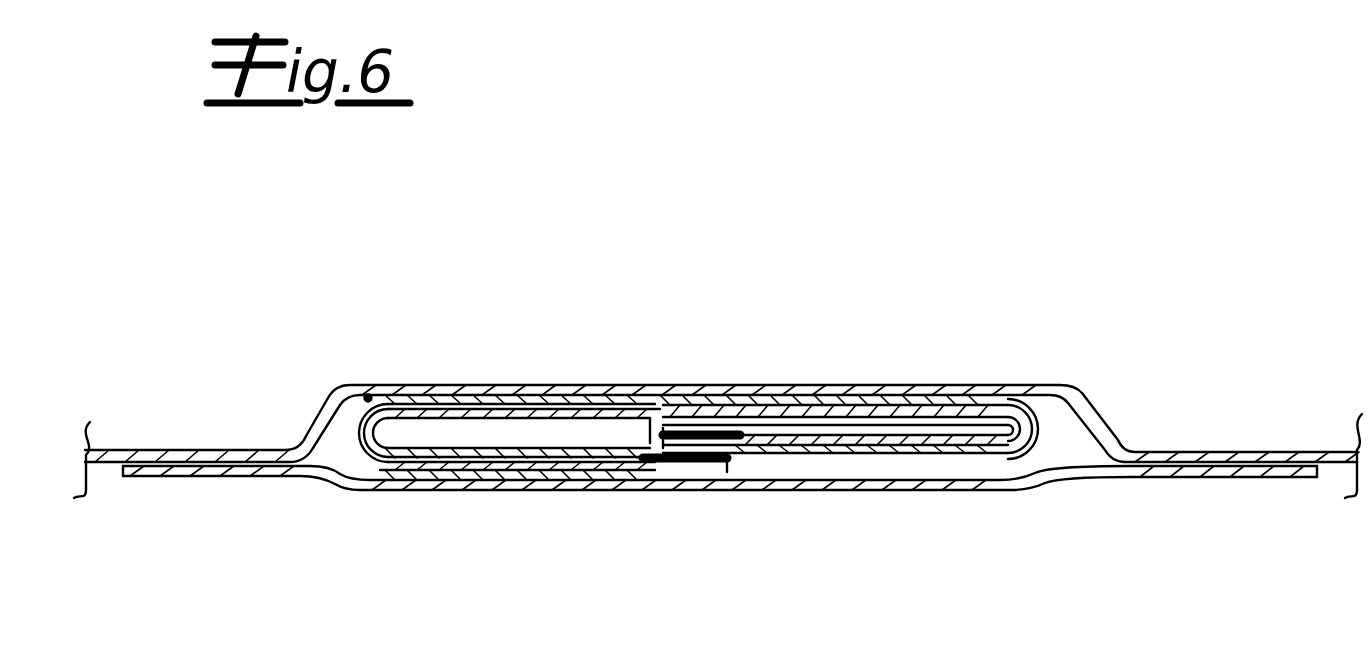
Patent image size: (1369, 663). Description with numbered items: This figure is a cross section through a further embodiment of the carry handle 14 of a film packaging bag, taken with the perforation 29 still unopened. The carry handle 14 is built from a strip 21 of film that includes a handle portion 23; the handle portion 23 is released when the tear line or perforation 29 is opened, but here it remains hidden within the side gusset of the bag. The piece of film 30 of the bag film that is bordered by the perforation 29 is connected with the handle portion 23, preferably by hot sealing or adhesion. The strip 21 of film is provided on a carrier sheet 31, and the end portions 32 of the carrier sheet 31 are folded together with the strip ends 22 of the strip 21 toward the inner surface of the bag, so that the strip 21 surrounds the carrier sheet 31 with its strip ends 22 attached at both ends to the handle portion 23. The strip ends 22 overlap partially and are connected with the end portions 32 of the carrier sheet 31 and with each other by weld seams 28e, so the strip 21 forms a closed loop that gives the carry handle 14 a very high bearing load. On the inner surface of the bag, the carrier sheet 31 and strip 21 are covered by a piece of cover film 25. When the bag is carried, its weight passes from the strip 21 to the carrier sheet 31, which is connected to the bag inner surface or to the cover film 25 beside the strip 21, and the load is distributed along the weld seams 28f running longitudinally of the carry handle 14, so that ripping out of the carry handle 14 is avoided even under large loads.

The carry handle 14 is at (778, 264).
The strip of film 21 is at (369, 395).
The strip ends 22 is at (772, 432).
The handle portion 23 is at (527, 395).
The piece of cover film 25 is at (1008, 488).
The weld seams 28e is at (730, 440).
The weld seams 28f is at (185, 468).
The perforation 29 is at (296, 425).
The piece of film 30 is at (1023, 395).
The carrier sheet 31 is at (447, 400).
The end portions 32 is at (838, 440).